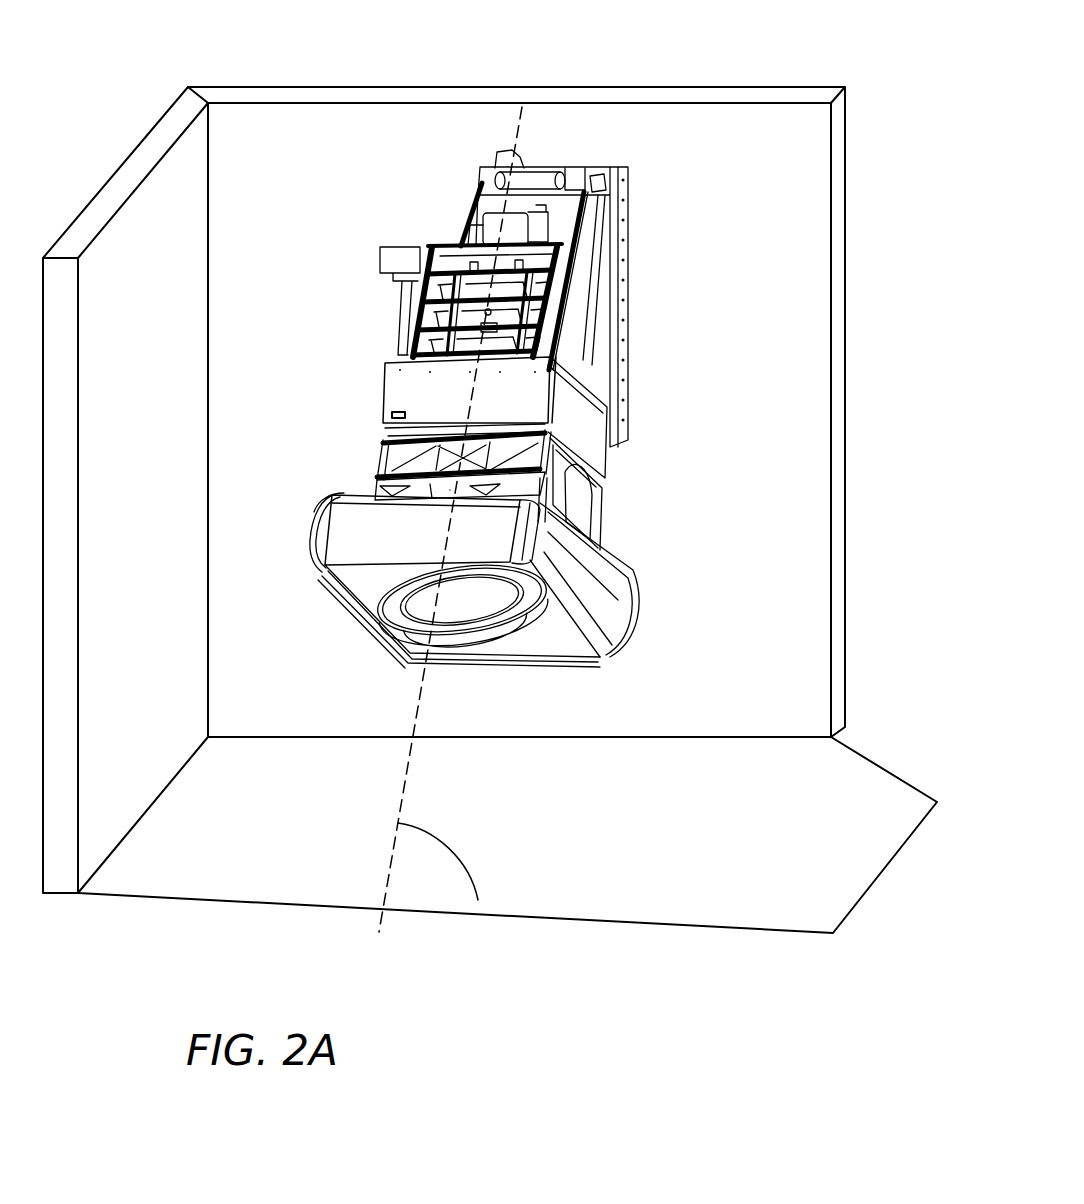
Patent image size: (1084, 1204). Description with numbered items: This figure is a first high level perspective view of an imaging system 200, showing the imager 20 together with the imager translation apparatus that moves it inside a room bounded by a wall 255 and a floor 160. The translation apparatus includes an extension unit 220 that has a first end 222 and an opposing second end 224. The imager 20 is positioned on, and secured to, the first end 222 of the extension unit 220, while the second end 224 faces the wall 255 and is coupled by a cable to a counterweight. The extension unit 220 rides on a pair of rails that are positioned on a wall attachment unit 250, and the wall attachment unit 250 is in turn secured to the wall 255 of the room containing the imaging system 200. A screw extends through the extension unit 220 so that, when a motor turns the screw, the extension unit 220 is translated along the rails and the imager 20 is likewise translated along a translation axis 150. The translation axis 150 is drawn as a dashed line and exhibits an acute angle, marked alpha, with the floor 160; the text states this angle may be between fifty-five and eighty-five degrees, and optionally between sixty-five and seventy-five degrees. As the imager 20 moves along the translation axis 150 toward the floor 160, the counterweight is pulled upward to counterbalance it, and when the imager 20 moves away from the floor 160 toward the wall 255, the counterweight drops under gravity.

The imaging system 200 is at (400, 29).
The wall attachment unit 250 is at (607, 167).
The wall 255 is at (742, 145).
The second end of extension unit 224 is at (432, 247).
The extension unit 220 is at (582, 438).
The first end of extension unit 222 is at (377, 473).
The imager 20 is at (605, 570).
The translation axis 150 is at (425, 690).
The floor 160 is at (833, 782).